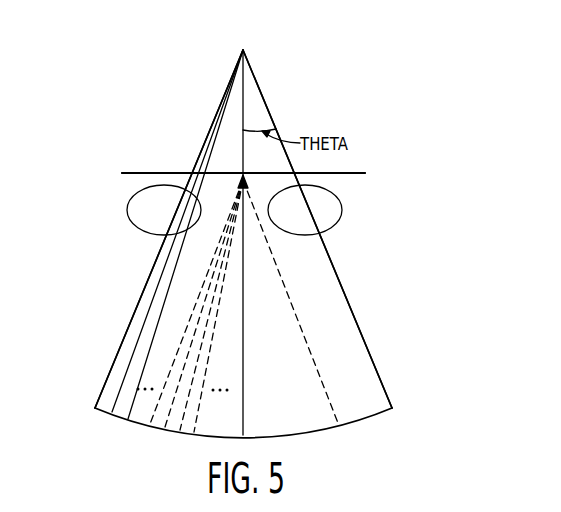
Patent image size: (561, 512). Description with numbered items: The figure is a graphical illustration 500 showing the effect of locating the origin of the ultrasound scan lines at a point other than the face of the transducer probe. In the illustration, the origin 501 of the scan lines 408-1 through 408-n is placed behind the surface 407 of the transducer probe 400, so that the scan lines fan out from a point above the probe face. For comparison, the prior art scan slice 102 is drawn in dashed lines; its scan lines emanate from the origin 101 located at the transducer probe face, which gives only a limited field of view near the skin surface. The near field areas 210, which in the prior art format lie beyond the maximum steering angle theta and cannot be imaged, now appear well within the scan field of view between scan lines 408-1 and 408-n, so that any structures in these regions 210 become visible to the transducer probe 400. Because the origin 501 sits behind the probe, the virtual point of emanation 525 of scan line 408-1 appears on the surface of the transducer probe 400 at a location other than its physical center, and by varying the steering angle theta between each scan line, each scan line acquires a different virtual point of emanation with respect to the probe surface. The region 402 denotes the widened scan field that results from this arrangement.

The graphical illustration 500 is at (146, 83).
The origin of the scan lines 501 is at (243, 50).
The transducer probe 400 is at (349, 172).
The face of the transducer probe 407 is at (353, 174).
The virtual point of emanation 525 is at (186, 165).
The origin of the transducer probe 101 is at (243, 172).
The scan slice 102 is at (311, 307).
The near field areas 210 is at (150, 222).
The scan fan region 402 is at (88, 276).
The scan line 408-1 is at (110, 369).
The scan line 408-n is at (370, 353).